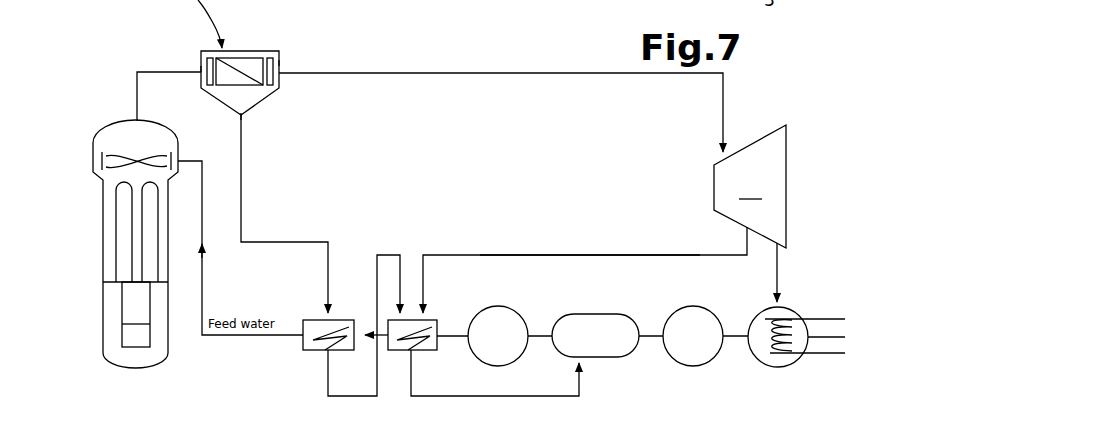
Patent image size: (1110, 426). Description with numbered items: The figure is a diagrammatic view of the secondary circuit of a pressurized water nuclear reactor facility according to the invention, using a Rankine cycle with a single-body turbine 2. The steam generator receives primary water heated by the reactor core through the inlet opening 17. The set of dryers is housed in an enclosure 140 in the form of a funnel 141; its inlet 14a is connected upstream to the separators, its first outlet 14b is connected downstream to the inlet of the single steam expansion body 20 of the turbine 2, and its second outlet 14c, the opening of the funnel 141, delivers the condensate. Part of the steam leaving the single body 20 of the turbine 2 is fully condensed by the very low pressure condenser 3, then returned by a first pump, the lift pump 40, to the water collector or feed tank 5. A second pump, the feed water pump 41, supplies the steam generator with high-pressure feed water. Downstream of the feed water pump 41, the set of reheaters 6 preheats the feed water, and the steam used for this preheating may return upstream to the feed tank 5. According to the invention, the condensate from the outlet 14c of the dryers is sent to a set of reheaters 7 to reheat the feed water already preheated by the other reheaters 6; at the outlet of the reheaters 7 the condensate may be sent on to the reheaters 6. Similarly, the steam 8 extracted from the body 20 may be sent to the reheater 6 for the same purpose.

The turbine 2 is at (798, 140).
The condenser 3 is at (772, 367).
The feed tank 5 is at (600, 357).
The set of reheaters 6 is at (437, 348).
The set of reheaters 7 is at (318, 350).
The steam 8 is at (572, 255).
The inlet 14a is at (201, 68).
The first outlet 14b is at (279, 61).
The second outlet 14c is at (243, 118).
The inlet opening 17 is at (135, 119).
The single steam expansion body 20 is at (750, 189).
The lift pump 40 is at (681, 307).
The feed water pump 41 is at (505, 307).
The enclosure 140 is at (247, 50).
The funnel 141 is at (262, 100).